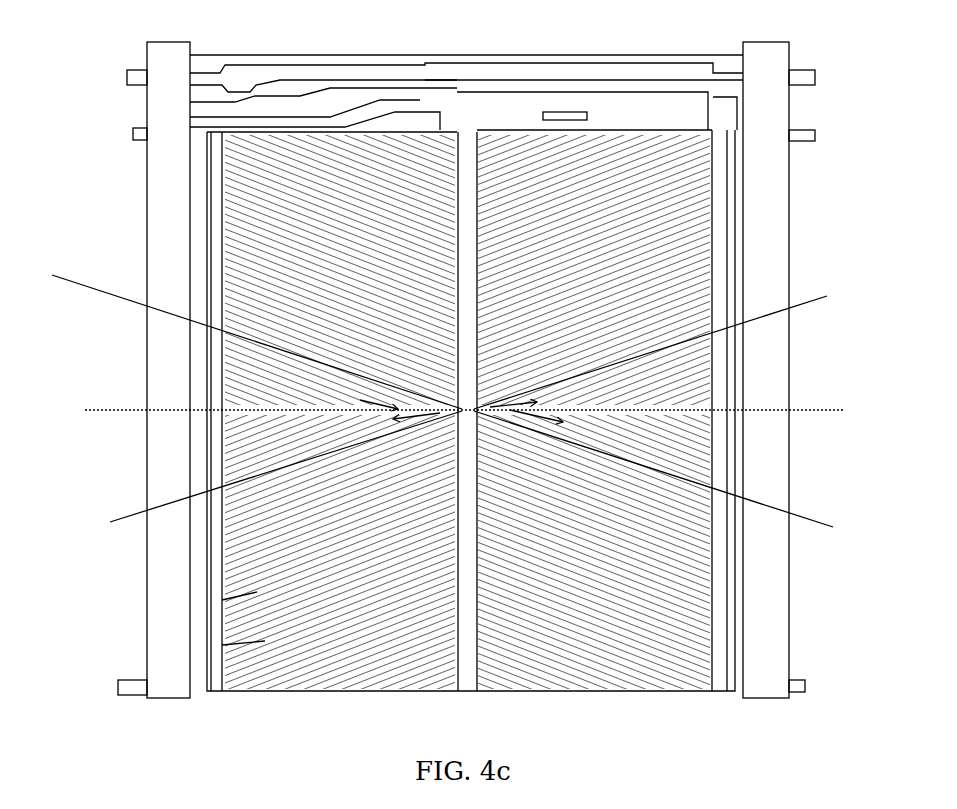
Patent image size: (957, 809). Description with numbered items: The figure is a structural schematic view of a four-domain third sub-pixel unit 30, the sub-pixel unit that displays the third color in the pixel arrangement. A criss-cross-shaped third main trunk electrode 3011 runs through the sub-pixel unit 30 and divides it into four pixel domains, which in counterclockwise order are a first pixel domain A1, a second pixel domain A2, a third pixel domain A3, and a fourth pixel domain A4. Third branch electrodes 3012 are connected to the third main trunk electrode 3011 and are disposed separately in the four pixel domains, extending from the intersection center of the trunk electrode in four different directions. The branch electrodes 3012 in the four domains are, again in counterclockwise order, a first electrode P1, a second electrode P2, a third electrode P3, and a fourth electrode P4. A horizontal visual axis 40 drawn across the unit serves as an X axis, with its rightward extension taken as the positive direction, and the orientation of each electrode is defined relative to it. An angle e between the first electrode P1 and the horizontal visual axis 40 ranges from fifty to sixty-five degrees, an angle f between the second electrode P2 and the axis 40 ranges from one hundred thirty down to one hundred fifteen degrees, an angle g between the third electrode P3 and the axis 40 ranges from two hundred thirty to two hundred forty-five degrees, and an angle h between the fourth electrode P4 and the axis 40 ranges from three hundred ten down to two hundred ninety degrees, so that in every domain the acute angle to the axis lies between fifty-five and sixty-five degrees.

The third sub-pixel unit 30 is at (665, 45).
The horizontal visual axis 40 is at (825, 408).
The first pixel domain A1 is at (712, 290).
The second pixel domain A2 is at (222, 257).
The third pixel domain A3 is at (222, 533).
The fourth pixel domain A4 is at (712, 575).
The first electrode P1 is at (690, 320).
The second electrode P2 is at (285, 320).
The third electrode P3 is at (288, 547).
The fourth electrode P4 is at (690, 548).
The third main trunk electrode 3011 is at (222, 600).
The third branch electrode 3012 is at (222, 645).
The angle e is at (530, 401).
The angle f is at (372, 397).
The angle g is at (392, 423).
The angle h is at (543, 422).